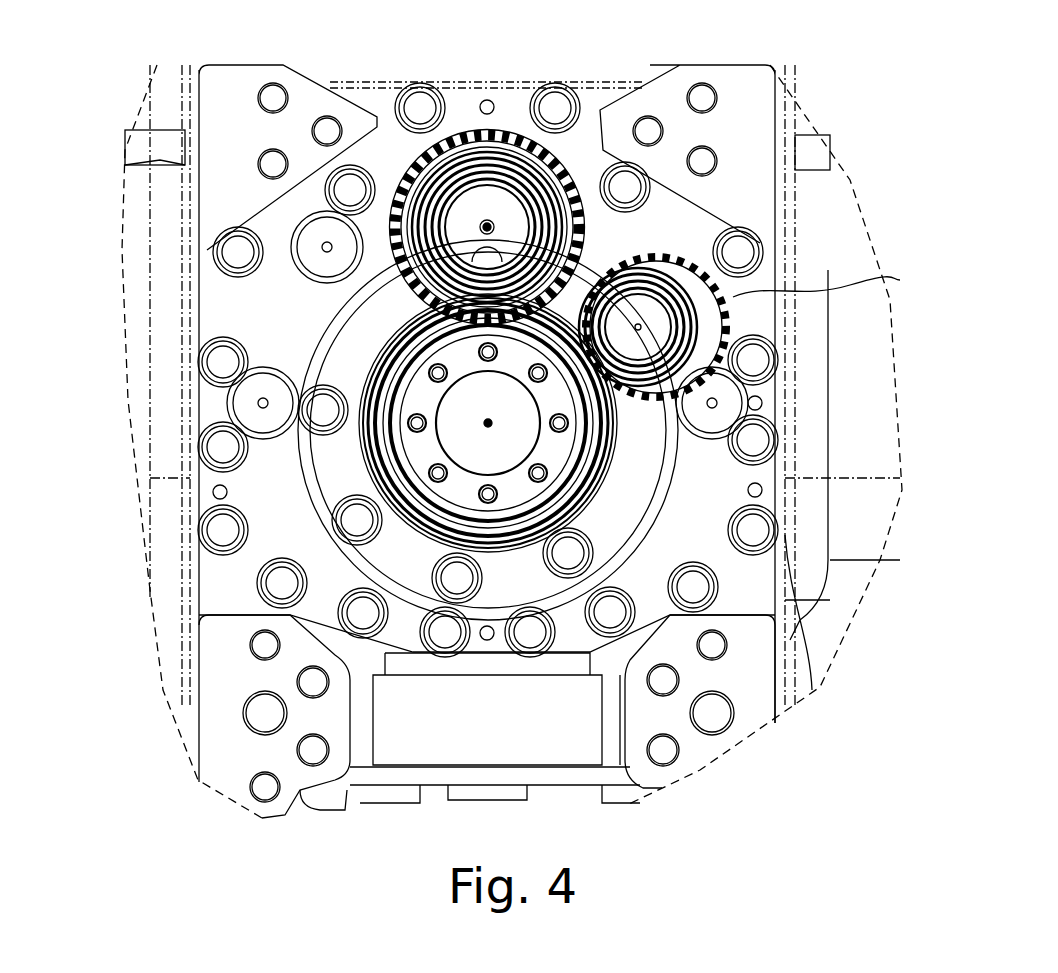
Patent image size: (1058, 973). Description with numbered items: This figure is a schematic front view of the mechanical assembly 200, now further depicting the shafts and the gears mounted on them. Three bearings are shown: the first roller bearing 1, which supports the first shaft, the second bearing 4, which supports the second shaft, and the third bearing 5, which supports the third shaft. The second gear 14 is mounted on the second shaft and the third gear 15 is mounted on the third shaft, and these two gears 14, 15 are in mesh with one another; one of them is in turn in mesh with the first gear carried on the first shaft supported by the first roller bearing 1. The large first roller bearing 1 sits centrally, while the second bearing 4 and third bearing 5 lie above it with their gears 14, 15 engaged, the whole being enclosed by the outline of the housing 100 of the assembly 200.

The first roller bearing 1 is at (600, 478).
The second bearing 4 is at (469, 158).
The second gear 14 is at (514, 133).
The third bearing 5 is at (735, 315).
The third gear 15 is at (733, 293).
The gearbox housing outline 100 is at (125, 232).
The assembly 200 is at (857, 146).